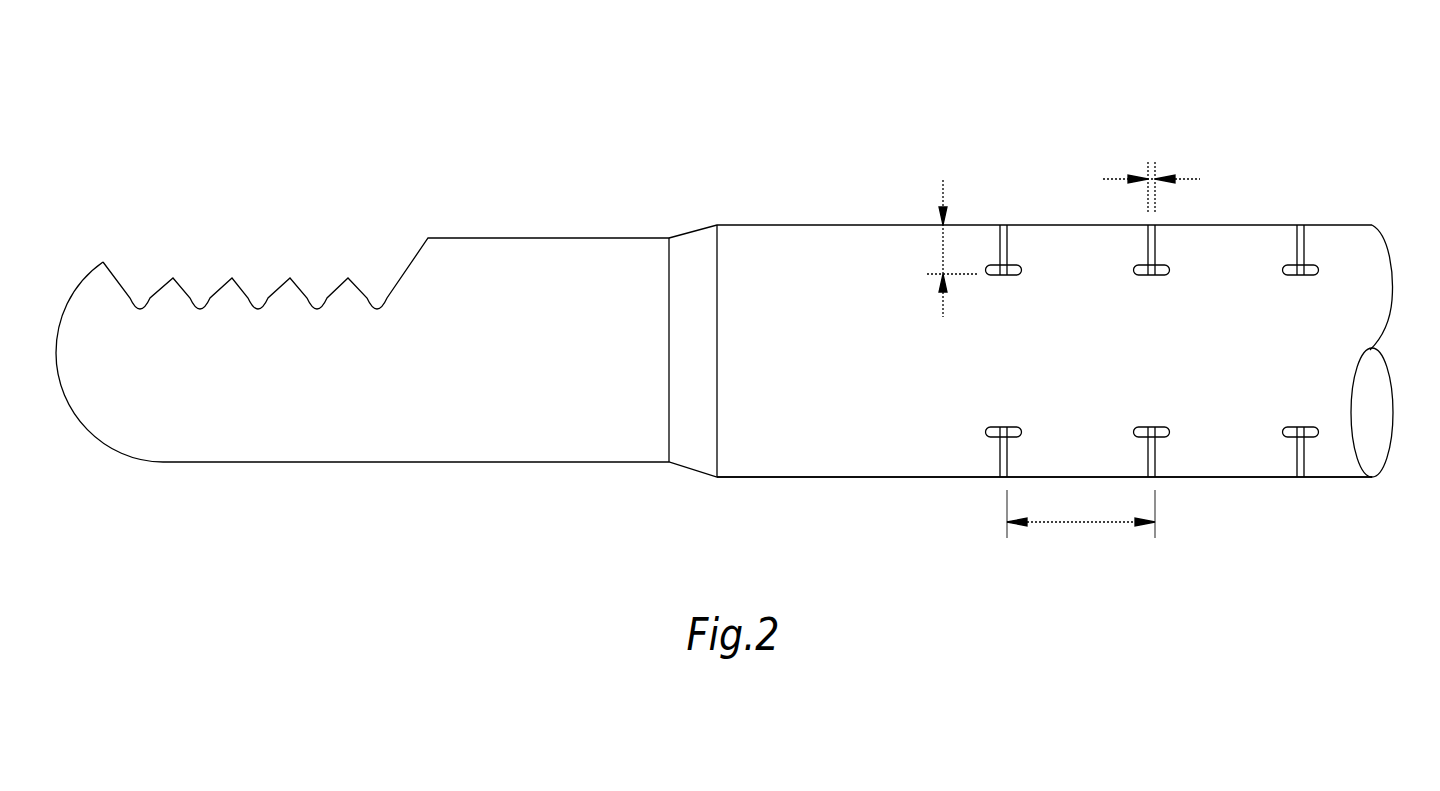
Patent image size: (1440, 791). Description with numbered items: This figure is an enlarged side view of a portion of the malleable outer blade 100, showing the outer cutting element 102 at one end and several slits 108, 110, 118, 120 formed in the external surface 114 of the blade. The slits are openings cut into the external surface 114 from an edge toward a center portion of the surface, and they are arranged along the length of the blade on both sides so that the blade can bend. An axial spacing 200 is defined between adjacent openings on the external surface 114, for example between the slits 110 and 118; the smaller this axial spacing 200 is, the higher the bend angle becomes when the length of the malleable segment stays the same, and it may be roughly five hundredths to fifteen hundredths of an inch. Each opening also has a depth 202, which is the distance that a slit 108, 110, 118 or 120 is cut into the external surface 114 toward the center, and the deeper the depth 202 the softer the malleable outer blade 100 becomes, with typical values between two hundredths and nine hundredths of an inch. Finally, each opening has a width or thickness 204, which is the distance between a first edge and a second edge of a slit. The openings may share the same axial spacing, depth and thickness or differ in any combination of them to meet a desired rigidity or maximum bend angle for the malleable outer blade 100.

The malleable outer blade 100 is at (1348, 100).
The outer cutting element 102 is at (232, 276).
The slit 108 is at (1003, 224).
The slit 110 is at (1003, 478).
The external surface 114 is at (817, 458).
The slit 118 is at (1160, 458).
The slit 120 is at (1160, 245).
The axial spacing 200 is at (1081, 525).
The depth 202 is at (940, 190).
The width/thickness 204 is at (1186, 178).